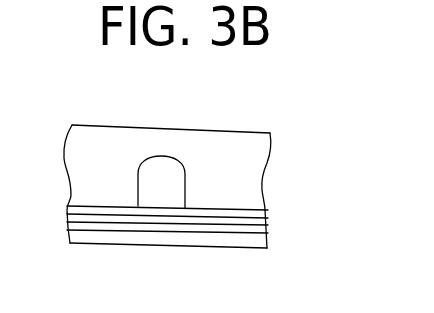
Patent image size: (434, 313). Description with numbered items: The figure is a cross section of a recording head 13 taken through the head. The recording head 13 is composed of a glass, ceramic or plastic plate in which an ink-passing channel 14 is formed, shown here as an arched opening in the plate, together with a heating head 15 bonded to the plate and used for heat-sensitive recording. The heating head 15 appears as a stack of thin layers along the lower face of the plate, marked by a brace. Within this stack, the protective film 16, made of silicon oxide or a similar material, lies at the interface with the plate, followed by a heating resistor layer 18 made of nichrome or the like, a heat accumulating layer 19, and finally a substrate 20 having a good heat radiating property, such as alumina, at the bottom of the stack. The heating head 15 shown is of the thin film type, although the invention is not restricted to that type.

The recording head 13 is at (103, 124).
The ink-passing channel 14 is at (180, 156).
The heating head 15 is at (281, 205).
The protective film 16 is at (245, 208).
The heating resistor layer 18 is at (265, 197).
The heat accumulating layer 19 is at (248, 236).
The substrate 20 is at (211, 238).